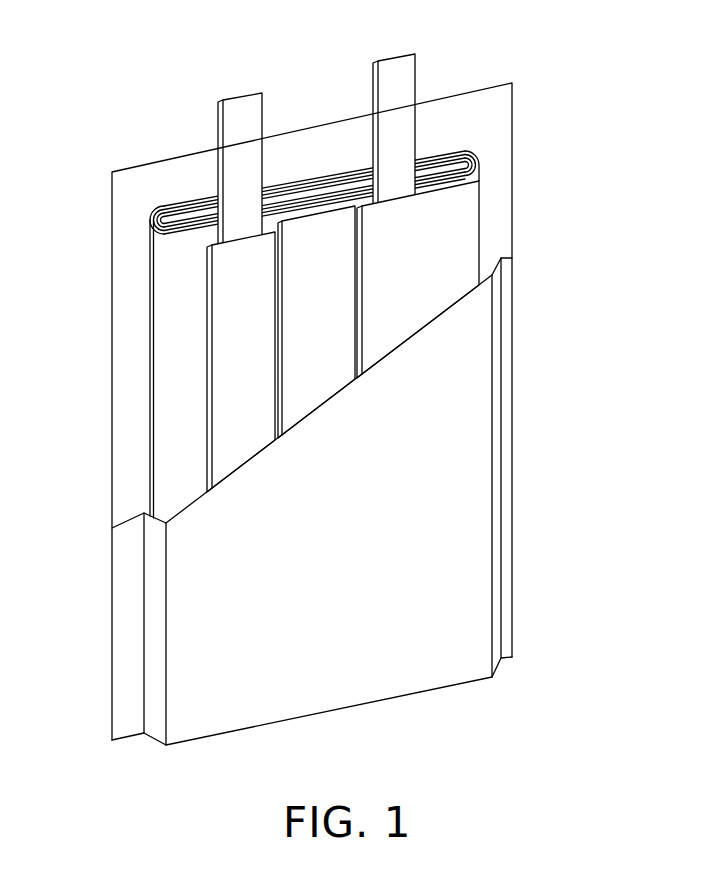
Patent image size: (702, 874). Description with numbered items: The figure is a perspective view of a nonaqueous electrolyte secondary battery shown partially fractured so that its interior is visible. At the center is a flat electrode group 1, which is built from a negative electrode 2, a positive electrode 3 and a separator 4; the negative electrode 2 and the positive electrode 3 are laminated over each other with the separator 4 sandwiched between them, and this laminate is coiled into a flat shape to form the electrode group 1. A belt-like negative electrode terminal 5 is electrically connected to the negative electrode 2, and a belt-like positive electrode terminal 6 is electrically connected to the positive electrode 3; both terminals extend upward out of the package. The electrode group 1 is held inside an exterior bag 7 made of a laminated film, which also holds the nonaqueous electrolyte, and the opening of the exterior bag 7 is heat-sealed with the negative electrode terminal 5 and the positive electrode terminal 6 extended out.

The flat electrode group 1 is at (557, 203).
The negative electrode 2 is at (465, 217).
The positive electrode 3 is at (255, 365).
The separator 4 is at (340, 280).
The negative electrode terminal 5 is at (395, 72).
The positive electrode terminal 6 is at (239, 112).
The exterior bag 7 is at (463, 508).